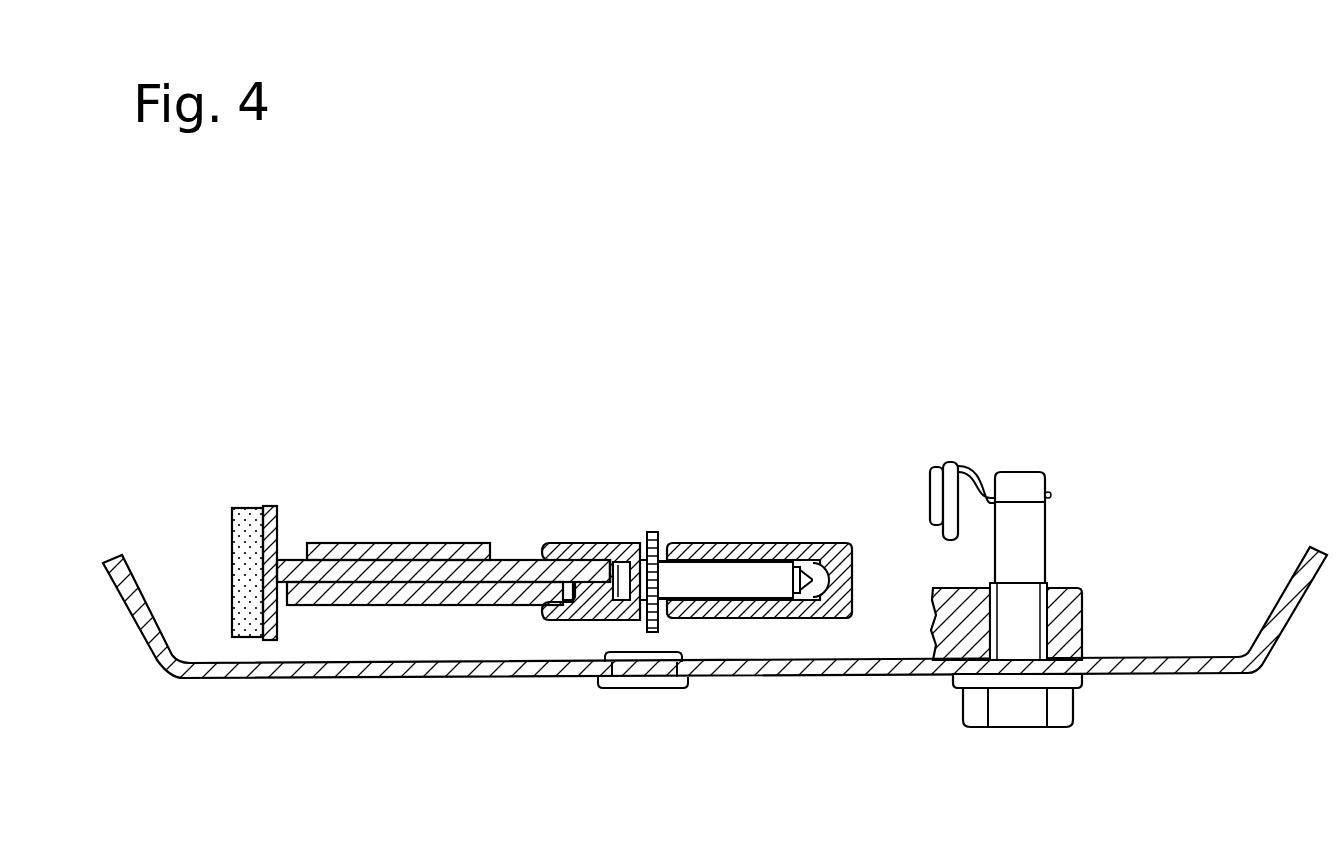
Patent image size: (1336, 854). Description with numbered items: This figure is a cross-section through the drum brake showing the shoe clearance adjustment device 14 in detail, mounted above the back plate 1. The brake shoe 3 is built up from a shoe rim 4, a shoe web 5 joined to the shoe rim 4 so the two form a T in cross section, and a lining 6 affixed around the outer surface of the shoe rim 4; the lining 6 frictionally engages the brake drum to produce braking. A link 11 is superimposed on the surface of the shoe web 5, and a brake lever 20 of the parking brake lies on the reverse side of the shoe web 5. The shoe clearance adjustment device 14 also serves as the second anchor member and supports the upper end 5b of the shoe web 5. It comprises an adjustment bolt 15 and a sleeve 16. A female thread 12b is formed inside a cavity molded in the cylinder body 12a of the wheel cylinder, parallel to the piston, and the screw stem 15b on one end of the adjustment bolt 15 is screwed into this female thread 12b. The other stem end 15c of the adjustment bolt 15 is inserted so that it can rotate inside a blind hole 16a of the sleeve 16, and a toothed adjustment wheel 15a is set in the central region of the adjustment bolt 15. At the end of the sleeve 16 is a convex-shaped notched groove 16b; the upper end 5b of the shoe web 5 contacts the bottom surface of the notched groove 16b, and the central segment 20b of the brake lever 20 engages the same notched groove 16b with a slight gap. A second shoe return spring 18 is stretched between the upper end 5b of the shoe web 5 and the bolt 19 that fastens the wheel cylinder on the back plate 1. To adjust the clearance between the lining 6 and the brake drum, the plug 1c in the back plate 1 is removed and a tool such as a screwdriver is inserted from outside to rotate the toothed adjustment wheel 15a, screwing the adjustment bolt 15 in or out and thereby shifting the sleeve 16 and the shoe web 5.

The back plate 1 is at (1180, 673).
The plug 1c is at (652, 690).
The brake shoe 3 is at (250, 506).
The shoe rim 4 is at (272, 503).
The shoe web 5 is at (295, 558).
The upper end of shoe web 5b is at (510, 557).
The lining 6 is at (230, 523).
The link 11 is at (410, 542).
The cylinder body 12a is at (1088, 610).
The female thread 12b is at (833, 565).
The shoe clearance adjustment device 14 is at (695, 537).
The adjustment bolt 15 is at (732, 568).
The toothed adjustment wheel 15a is at (652, 537).
The screw stem 15b is at (813, 593).
The other stem end 15c is at (640, 593).
The sleeve 16 is at (603, 542).
The blind hole 16a is at (630, 590).
The notched groove 16b is at (538, 542).
The second shoe return spring 18 is at (933, 457).
The bolt 19 is at (1040, 530).
The brake lever 20 is at (417, 600).
The central segment 20b is at (567, 590).